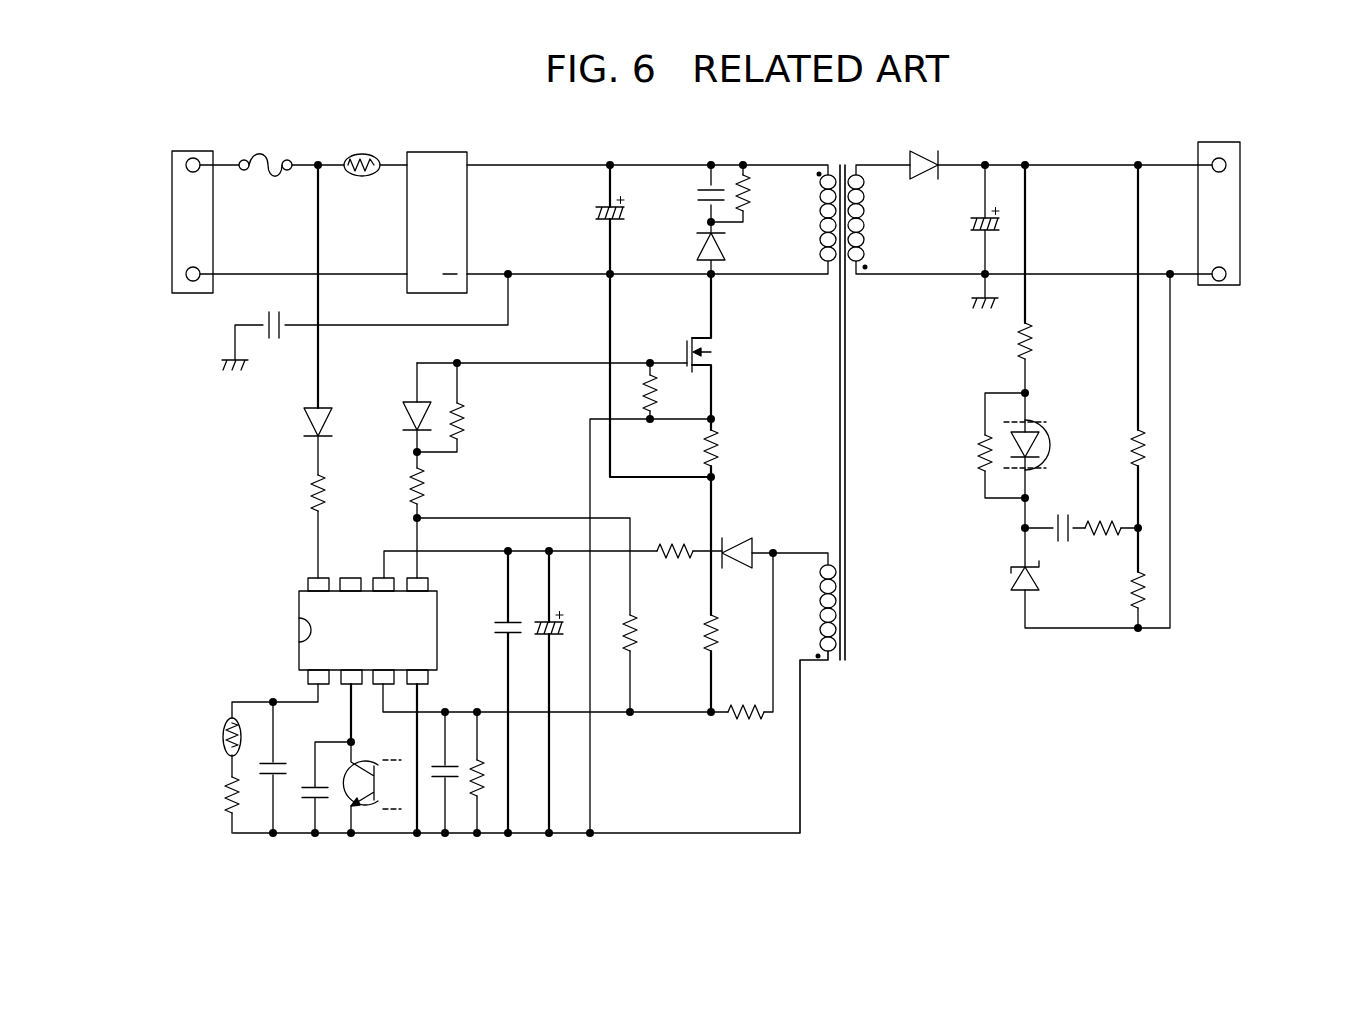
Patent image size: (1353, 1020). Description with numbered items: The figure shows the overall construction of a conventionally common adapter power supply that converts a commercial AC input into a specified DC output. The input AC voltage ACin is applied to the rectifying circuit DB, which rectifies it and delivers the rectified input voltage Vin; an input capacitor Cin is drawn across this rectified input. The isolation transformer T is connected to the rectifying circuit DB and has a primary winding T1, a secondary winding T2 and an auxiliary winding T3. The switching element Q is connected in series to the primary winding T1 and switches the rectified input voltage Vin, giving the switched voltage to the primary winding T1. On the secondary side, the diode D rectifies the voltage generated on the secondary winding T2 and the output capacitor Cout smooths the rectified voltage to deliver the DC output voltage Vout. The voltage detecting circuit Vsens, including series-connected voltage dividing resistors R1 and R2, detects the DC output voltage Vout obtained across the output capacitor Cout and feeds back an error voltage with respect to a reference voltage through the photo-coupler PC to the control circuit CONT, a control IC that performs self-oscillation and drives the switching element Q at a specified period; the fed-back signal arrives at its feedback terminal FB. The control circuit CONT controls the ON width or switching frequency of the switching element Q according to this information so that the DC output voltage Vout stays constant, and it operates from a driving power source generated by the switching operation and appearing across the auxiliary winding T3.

The input AC voltage ACin is at (187, 209).
The rectifying circuit DB is at (437, 222).
The rectified input voltage Vin is at (606, 152).
The input capacitor Cin is at (636, 321).
The isolation transformer T is at (843, 398).
The primary winding T1 is at (814, 217).
The secondary winding T2 is at (868, 222).
The auxiliary winding T3 is at (815, 612).
The diode D is at (924, 177).
The output capacitor Cout is at (962, 236).
The DC output voltage Vout is at (1221, 199).
The switching element Q is at (710, 352).
The photo-coupler PC is at (707, 617).
The voltage dividing resistor R1 is at (1122, 315).
The voltage dividing resistor R2 is at (1121, 547).
The voltage detecting circuit Vsens is at (1148, 489).
The control circuit CONT is at (300, 616).
The feedback terminal FB is at (360, 715).